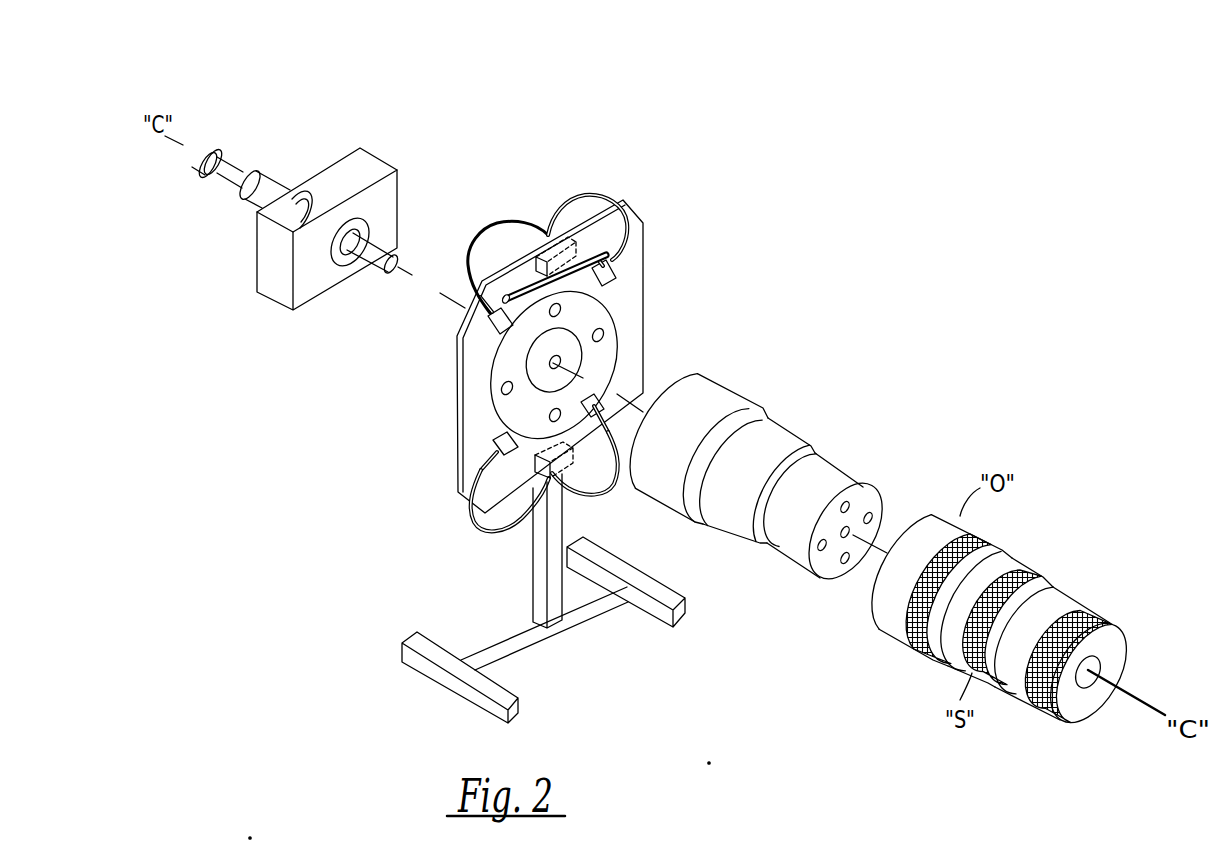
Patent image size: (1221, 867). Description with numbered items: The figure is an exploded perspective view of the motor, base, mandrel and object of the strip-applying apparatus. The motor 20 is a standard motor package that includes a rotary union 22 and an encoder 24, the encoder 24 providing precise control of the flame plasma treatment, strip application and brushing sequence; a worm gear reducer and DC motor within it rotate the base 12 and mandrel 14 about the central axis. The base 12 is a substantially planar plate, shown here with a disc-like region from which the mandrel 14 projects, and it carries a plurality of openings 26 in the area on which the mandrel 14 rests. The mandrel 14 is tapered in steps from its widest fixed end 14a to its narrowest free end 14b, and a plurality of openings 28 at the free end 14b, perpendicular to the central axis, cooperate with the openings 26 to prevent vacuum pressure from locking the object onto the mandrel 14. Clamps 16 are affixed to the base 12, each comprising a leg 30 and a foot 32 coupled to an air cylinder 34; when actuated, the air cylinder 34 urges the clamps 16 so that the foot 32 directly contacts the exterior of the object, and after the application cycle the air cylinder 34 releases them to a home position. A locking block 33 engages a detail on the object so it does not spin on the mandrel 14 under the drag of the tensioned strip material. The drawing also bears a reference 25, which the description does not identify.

The base 12 is at (475, 417).
The mandrel 14 is at (768, 408).
The fixed end 14a is at (704, 373).
The free end 14b is at (857, 477).
The clamps 16 is at (603, 259).
The motor 20 is at (368, 162).
The rotary union 22 is at (267, 185).
The encoder 24 is at (203, 147).
The flange disc 25 is at (615, 314).
The openings 26 is at (560, 307).
The openings 28 is at (823, 548).
The leg 30 is at (500, 432).
The foot 32 is at (502, 443).
The locking block 33 is at (603, 272).
The air cylinder 34 is at (563, 237).